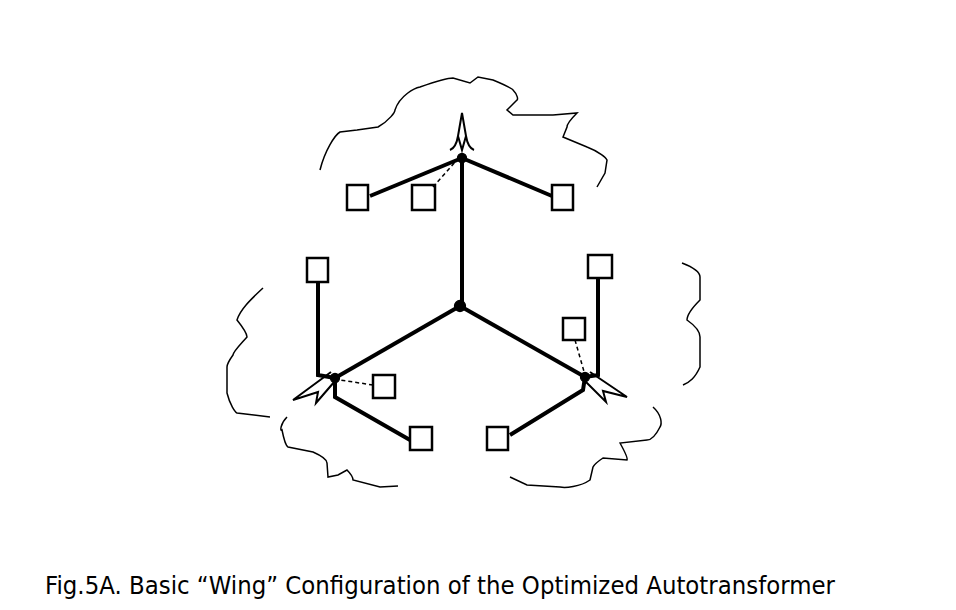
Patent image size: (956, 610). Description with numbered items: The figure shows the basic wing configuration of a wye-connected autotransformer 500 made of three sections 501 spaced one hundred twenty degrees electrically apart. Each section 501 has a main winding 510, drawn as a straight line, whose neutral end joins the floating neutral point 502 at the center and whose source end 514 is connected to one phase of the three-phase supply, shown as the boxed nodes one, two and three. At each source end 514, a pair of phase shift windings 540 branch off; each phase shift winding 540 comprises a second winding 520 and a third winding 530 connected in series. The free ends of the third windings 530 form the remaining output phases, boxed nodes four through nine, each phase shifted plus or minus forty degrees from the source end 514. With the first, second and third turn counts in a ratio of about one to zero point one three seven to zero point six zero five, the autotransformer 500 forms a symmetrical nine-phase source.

The wye-connected autotransformer 500 is at (163, 479).
The section 501 is at (537, 65).
The floating neutral point 502 is at (467, 297).
The main winding 510 is at (458, 252).
The source end 514 is at (472, 163).
The second winding 520 is at (452, 142).
The third winding 530 is at (527, 177).
The phase shift winding 540 is at (466, 285).